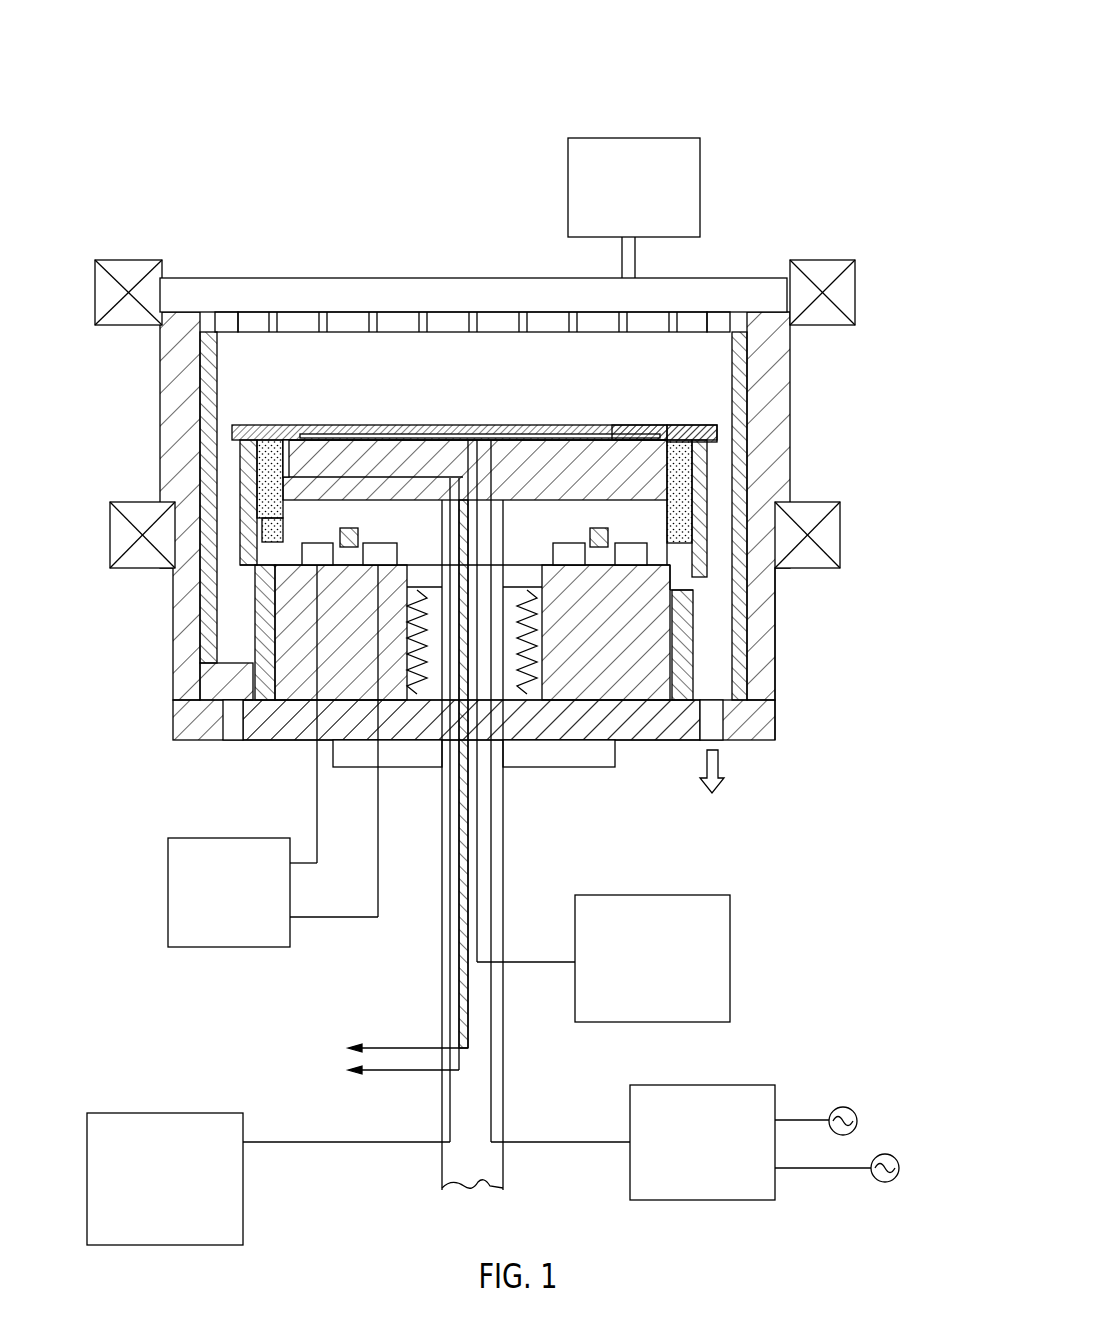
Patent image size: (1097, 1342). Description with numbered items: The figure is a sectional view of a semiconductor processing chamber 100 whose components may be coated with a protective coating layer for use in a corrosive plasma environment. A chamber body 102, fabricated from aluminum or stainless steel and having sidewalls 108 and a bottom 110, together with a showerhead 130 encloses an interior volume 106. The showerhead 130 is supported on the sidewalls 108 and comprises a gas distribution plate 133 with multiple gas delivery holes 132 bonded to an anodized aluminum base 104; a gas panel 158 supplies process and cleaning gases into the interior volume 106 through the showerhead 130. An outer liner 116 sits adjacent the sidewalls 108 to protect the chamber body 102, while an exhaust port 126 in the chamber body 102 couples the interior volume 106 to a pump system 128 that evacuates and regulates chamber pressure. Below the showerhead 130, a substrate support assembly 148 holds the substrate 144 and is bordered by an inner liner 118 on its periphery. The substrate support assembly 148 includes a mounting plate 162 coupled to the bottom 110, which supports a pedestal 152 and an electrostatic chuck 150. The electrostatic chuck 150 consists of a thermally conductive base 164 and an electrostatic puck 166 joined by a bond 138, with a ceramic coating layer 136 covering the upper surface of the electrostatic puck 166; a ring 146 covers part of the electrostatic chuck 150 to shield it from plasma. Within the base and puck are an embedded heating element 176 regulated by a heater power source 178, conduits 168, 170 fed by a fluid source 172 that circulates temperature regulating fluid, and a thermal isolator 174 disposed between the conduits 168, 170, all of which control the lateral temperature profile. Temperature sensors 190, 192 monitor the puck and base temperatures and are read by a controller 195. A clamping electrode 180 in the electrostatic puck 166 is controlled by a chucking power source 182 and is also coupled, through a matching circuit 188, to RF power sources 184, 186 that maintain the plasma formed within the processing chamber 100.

The processing chamber 100 is at (793, 72).
The chamber body 102 is at (877, 378).
The anodized aluminum base 104 is at (752, 278).
The interior volume 106 is at (253, 380).
The sidewalls 108 is at (763, 480).
The bottom 110 is at (280, 735).
The outer liner 116 is at (745, 630).
The inner liner 118 is at (692, 678).
The exhaust port 126 is at (725, 718).
The pump system 128 is at (739, 802).
The showerhead 130 is at (320, 278).
The gas delivery holes 132 is at (442, 318).
The gas distribution plate 133 is at (243, 322).
The ceramic coating layer 136 is at (558, 427).
The bond 138 is at (255, 520).
The substrate 144 is at (627, 427).
The ring 146 is at (678, 427).
The substrate support assembly 148 is at (630, 685).
The electrostatic chuck 150 is at (655, 487).
The pedestal 152 is at (408, 938).
The gas panel 158 is at (603, 225).
The mounting plate 162 is at (581, 648).
The thermally conductive base 164 is at (513, 533).
The electrostatic puck 166 is at (596, 478).
The conduit 168 is at (282, 645).
The conduit 170 is at (300, 580).
The fluid source 172 is at (205, 932).
The thermal isolator 174 is at (347, 518).
The heating element 176 is at (310, 445).
The heater power source 178 is at (143, 1230).
The clamping electrode 180 is at (523, 440).
The chucking power source 182 is at (632, 1008).
The RF power source 184 is at (857, 1110).
The RF power source 186 is at (897, 1158).
The matching circuit 188 is at (683, 1180).
The temperature sensor 190 is at (469, 437).
The temperature sensor 192 is at (376, 428).
The controller 195 is at (327, 1058).